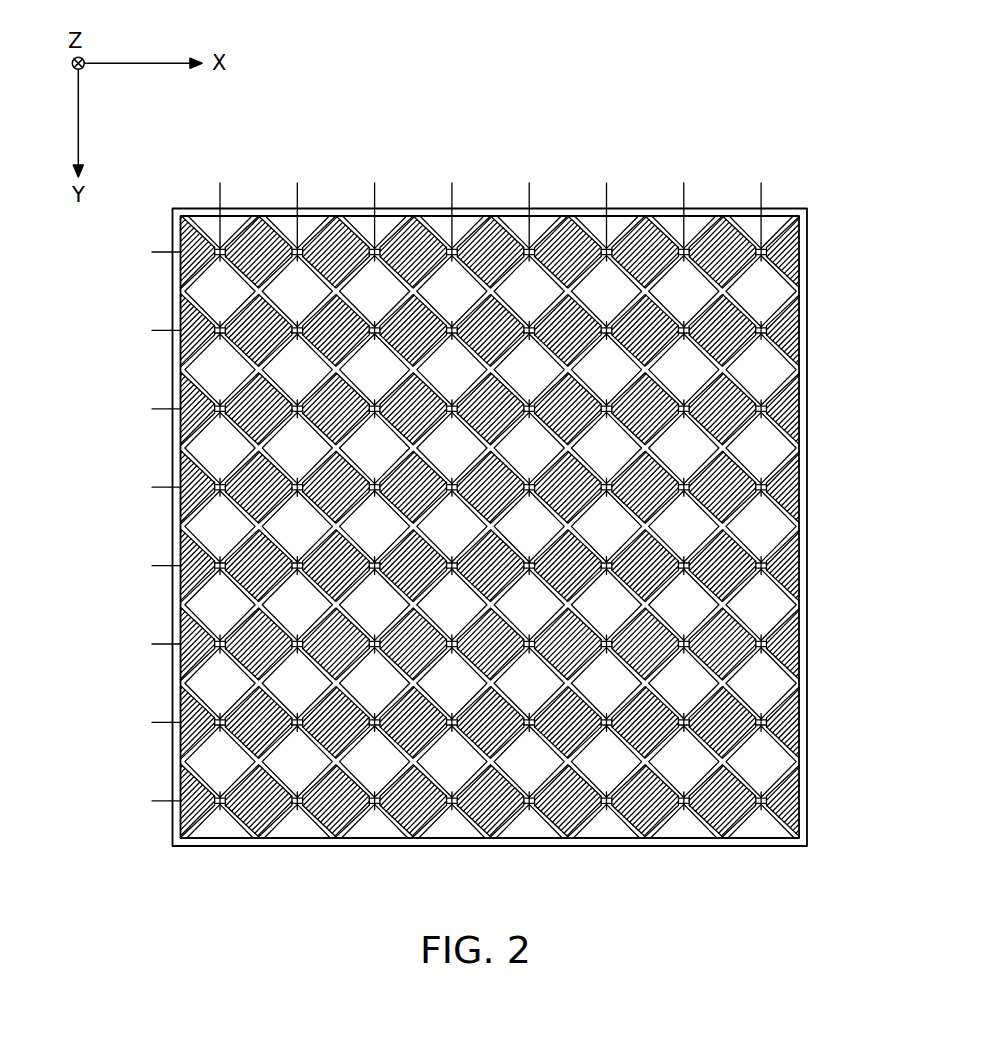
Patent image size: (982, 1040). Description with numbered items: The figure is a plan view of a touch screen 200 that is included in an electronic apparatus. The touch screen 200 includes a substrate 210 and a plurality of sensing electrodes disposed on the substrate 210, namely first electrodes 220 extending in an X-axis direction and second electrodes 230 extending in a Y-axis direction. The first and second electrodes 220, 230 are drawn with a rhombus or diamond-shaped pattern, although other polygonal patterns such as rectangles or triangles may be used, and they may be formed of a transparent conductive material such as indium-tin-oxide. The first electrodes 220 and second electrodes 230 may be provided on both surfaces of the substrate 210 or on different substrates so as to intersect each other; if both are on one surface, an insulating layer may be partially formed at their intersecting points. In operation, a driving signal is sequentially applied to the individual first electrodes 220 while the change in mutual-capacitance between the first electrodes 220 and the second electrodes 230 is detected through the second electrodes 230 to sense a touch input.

The touch screen 200 is at (602, 106).
The substrate 210 is at (176, 208).
The first electrodes 220 is at (184, 267).
The second electrodes 230 is at (233, 220).